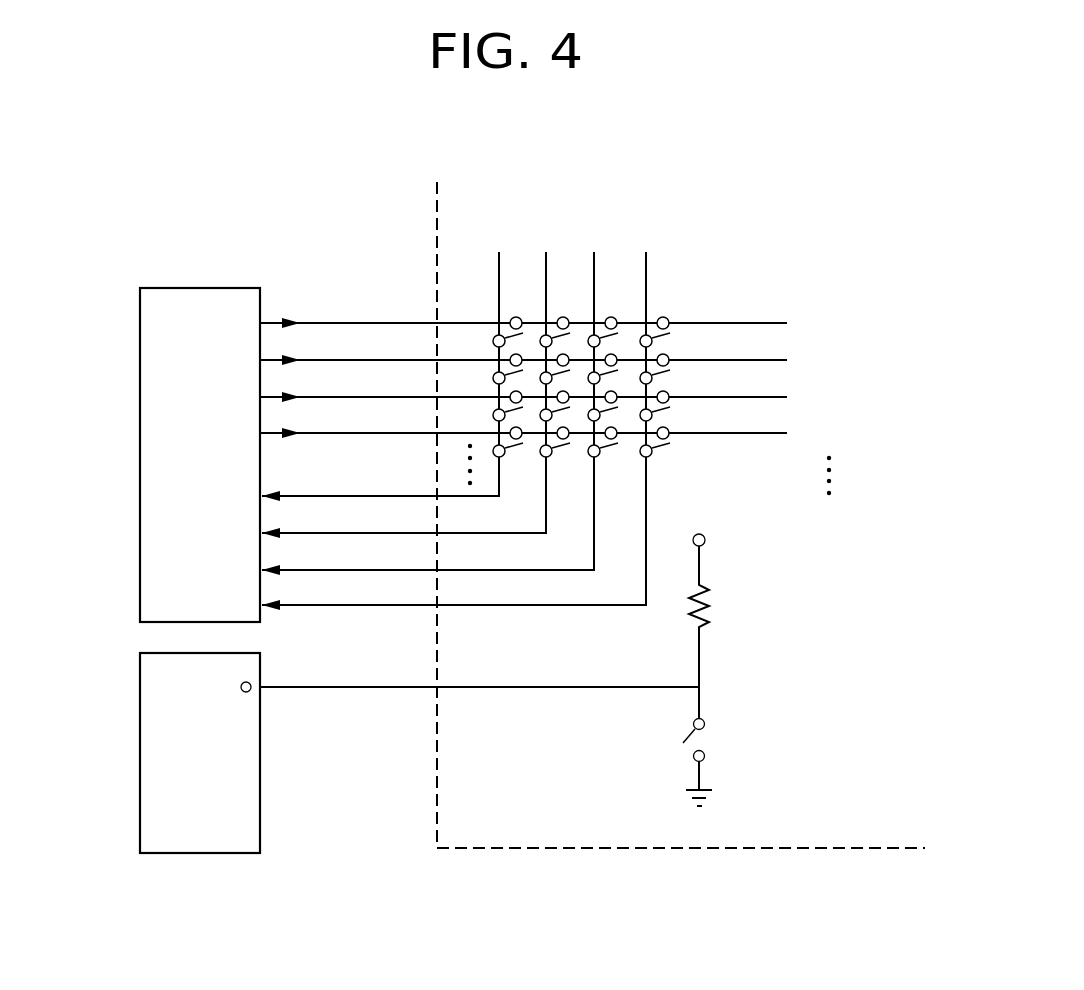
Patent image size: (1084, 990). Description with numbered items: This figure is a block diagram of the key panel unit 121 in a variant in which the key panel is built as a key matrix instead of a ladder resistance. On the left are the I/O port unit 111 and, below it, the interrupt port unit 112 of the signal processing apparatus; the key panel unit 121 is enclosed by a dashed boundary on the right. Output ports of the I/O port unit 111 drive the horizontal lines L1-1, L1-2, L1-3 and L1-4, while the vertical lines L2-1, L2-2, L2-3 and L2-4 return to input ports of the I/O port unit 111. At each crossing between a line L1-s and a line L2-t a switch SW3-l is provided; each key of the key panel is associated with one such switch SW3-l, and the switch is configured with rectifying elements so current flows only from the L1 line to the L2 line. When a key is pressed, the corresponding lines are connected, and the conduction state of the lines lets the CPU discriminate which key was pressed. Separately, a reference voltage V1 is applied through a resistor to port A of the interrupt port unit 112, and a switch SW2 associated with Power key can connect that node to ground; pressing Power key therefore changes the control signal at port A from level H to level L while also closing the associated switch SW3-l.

The I/O port unit 111 is at (140, 447).
The interrupt port unit 112 is at (140, 747).
The key panel unit 121 is at (818, 849).
The switch SW2 is at (704, 740).
The switch SW3-l is at (673, 347).
The reference voltage V1 is at (699, 611).
The line L1-1 is at (558, 325).
The line L1-2 is at (558, 362).
The line L1-3 is at (558, 399).
The line L1-4 is at (558, 435).
The line L2-1 is at (388, 349).
The line L2-2 is at (420, 367).
The line L2-3 is at (447, 386).
The line L2-4 is at (474, 403).